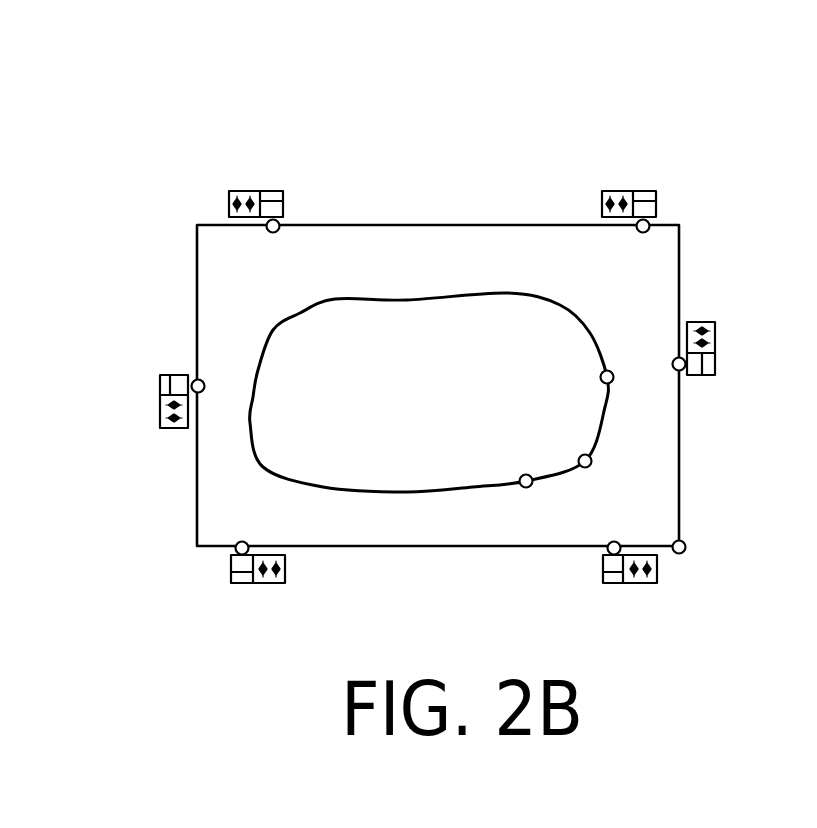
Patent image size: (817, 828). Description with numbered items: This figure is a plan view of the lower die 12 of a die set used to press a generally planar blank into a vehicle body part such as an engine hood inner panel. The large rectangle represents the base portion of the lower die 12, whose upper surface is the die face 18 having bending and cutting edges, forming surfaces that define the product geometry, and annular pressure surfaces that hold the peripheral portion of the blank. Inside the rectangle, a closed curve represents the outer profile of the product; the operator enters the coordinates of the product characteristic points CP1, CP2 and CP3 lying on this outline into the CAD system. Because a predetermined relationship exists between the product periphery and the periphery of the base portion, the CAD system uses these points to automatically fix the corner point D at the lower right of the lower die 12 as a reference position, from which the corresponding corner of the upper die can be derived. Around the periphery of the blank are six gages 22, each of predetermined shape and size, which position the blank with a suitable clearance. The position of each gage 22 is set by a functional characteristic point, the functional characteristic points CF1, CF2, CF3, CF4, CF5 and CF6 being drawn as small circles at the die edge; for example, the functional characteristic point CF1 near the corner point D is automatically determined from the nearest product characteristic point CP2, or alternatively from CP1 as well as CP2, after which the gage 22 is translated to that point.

The lower die 12 is at (474, 170).
The die face 18 is at (635, 271).
The gage 22 is at (260, 200).
The functional characteristic point CF1 is at (608, 543).
The functional characteristic point CF2 is at (242, 541).
The functional characteristic point CF3 is at (204, 382).
The functional characteristic point CF4 is at (281, 224).
The functional characteristic point CF5 is at (649, 224).
The functional characteristic point CF6 is at (684, 370).
The product characteristic point CP1 is at (612, 381).
The product characteristic point CP2 is at (590, 465).
The product characteristic point CP3 is at (526, 488).
The corner point D is at (681, 554).